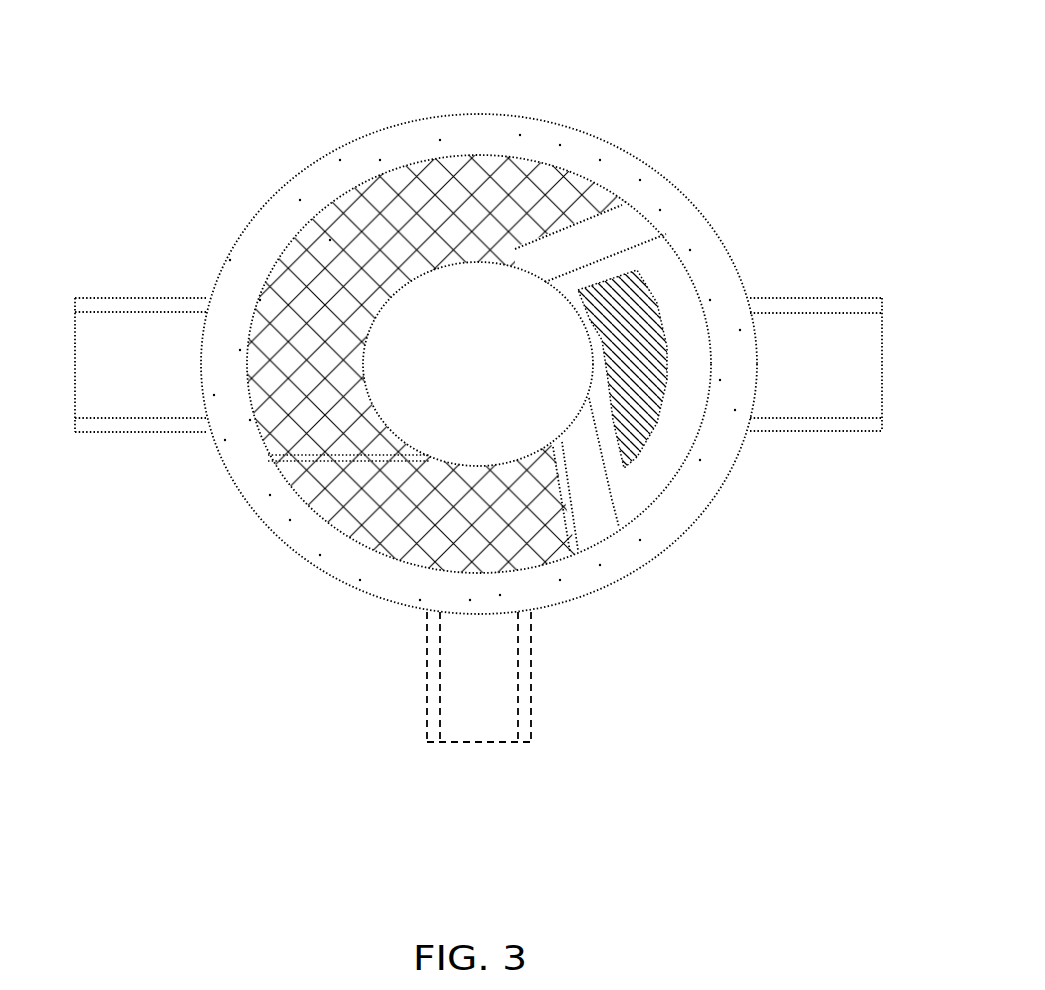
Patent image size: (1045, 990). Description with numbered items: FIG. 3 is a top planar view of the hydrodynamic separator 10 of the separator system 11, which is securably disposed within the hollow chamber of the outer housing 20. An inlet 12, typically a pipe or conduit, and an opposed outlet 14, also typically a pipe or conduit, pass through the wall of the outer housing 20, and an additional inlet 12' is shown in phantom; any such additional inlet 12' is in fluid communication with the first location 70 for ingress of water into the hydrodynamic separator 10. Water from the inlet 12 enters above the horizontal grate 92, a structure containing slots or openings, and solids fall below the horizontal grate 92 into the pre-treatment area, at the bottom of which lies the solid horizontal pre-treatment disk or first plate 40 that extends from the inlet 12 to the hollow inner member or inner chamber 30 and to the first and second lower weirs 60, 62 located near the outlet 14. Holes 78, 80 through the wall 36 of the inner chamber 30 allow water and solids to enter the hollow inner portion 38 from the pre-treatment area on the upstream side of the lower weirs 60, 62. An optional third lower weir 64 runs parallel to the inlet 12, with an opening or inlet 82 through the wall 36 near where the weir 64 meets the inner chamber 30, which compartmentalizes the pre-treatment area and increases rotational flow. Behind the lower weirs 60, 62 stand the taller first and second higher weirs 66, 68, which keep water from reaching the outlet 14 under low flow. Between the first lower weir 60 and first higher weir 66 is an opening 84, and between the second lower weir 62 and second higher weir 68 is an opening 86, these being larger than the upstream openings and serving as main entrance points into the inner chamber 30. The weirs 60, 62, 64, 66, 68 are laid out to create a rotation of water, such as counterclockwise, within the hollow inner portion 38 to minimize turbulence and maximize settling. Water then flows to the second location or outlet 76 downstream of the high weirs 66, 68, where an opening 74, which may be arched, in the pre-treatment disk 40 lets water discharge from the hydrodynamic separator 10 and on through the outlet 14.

The hydrodynamic separator 10 is at (496, 150).
The separator system 11 is at (816, 113).
The inlet 12 is at (141, 321).
The inlet 12' is at (534, 682).
The outlet 14 is at (815, 297).
The outer housing 20 is at (630, 555).
The inner chamber 30 is at (482, 468).
The wall 36 is at (482, 468).
The hollow inner portion 38 is at (432, 305).
The first plate 40 is at (360, 213).
The first lower weir 60 is at (580, 420).
The second lower weir 62 is at (595, 220).
The third lower weir 64 is at (337, 453).
The first higher weir 66 is at (612, 488).
The second higher weir 68 is at (613, 253).
The first location 70 is at (303, 297).
The opening 74 is at (648, 300).
The outlet 76 is at (663, 450).
The hole 78 is at (563, 446).
The hole 80 is at (473, 260).
The inlet 82 is at (415, 445).
The opening 84 is at (540, 563).
The opening 86 is at (520, 267).
The horizontal grate 92 is at (377, 512).